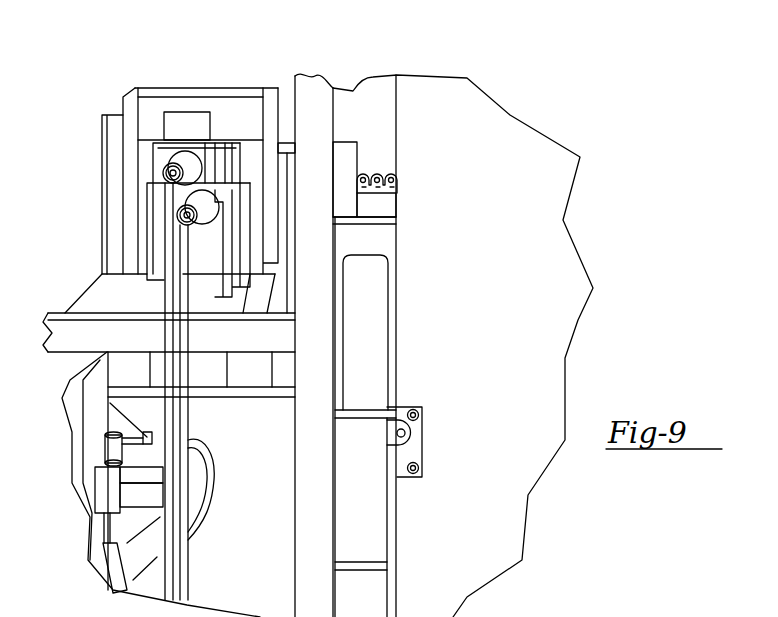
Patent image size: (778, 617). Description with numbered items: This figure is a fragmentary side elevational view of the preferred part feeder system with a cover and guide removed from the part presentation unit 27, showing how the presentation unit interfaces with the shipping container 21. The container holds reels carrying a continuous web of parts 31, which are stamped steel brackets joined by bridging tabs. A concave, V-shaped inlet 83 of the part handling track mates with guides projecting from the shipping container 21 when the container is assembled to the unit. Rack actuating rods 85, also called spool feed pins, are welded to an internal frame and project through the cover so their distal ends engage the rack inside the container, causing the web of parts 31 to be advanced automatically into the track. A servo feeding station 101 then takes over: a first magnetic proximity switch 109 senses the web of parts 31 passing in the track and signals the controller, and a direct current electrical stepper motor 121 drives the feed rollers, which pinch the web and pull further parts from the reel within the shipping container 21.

The shipping container 21 is at (455, 516).
The part presentation unit 27 is at (222, 79).
The parts 31 is at (397, 188).
The inlet 83 is at (344, 150).
The rack actuating rod 85 is at (364, 220).
The servo feeding station 101 is at (150, 110).
The first magnetic proximity switch 109 is at (286, 147).
The electrical stepper motor 121 is at (155, 207).